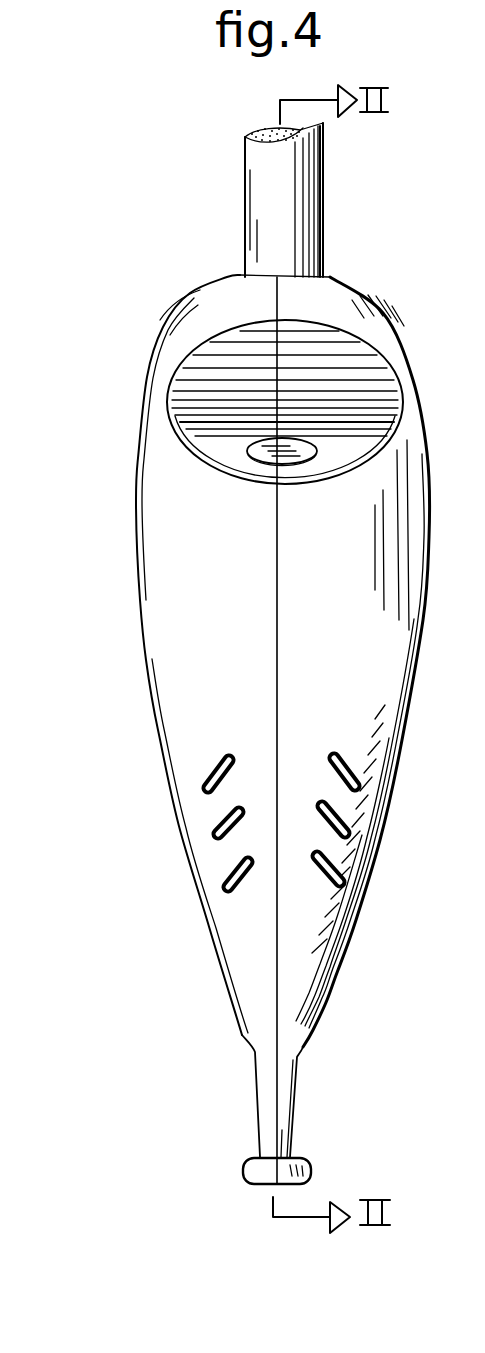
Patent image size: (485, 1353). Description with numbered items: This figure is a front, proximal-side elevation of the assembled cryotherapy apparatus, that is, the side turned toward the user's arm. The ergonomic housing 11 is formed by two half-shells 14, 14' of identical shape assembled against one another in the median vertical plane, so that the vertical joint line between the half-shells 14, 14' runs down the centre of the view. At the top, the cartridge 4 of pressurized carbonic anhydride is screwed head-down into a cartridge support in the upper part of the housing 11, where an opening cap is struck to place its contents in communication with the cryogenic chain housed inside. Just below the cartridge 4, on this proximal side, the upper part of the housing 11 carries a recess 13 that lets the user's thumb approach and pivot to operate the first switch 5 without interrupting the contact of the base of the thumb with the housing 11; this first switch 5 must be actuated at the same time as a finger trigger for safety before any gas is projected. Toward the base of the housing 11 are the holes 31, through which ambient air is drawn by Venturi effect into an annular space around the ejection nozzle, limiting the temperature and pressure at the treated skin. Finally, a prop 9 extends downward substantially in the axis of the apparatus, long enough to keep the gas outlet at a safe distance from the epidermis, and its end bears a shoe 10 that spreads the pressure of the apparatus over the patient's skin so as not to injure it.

The cartridge 4 is at (260, 192).
The housing 11 is at (158, 281).
The recess 13 is at (243, 375).
The first switch 5 is at (250, 462).
The half-shell 14 is at (146, 665).
The half-shell 14' is at (234, 734).
The holes 31 is at (322, 825).
The prop 9 is at (257, 1092).
The shoe 10 is at (243, 1168).